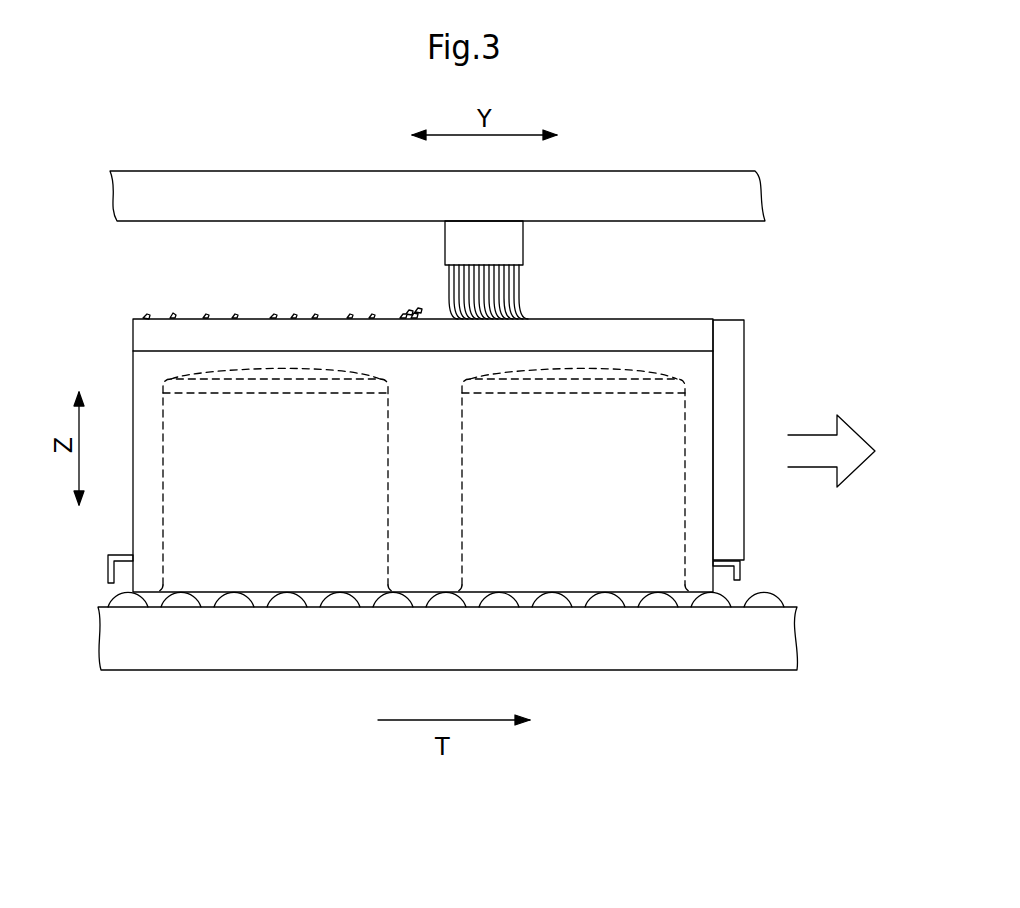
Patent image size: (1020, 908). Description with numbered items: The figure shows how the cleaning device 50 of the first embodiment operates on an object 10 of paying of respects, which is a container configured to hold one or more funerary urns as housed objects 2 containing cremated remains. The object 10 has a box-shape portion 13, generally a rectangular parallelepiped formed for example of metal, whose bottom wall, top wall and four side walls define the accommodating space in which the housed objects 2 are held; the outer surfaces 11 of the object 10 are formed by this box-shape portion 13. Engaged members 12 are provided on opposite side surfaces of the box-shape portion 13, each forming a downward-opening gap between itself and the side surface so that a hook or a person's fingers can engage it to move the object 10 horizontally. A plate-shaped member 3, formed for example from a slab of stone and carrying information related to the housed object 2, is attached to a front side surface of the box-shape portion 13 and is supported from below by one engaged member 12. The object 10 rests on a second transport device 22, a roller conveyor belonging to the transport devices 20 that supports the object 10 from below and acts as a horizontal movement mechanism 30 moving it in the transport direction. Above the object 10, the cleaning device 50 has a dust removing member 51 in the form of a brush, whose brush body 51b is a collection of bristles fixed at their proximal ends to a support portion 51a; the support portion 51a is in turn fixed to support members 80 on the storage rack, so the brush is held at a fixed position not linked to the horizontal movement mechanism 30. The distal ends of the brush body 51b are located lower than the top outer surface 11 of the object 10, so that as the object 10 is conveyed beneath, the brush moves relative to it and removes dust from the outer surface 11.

The support member 80 is at (221, 171).
The dust removing member 51 is at (506, 219).
The cleaning device 50 is at (506, 219).
The support portion 51a is at (445, 243).
The brush body 51b is at (445, 290).
The object of paying of respects 10 is at (725, 293).
The outer surface 11 is at (597, 318).
The box-shape portion 13 is at (133, 368).
The plate-shaped member 3 is at (745, 360).
The engaged member 12 is at (108, 574).
The housed object 2 is at (460, 497).
The second transport device 22 is at (293, 672).
The transport device 20 is at (446, 686).
The horizontal movement mechanism 30 is at (620, 653).